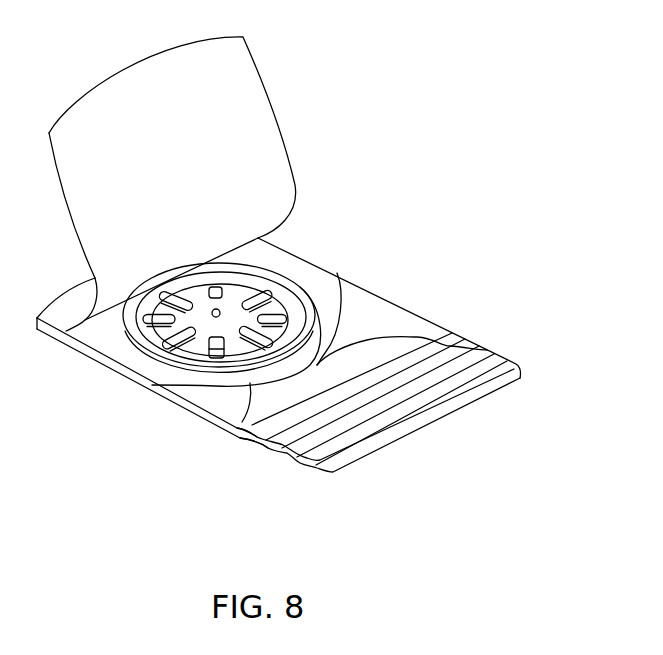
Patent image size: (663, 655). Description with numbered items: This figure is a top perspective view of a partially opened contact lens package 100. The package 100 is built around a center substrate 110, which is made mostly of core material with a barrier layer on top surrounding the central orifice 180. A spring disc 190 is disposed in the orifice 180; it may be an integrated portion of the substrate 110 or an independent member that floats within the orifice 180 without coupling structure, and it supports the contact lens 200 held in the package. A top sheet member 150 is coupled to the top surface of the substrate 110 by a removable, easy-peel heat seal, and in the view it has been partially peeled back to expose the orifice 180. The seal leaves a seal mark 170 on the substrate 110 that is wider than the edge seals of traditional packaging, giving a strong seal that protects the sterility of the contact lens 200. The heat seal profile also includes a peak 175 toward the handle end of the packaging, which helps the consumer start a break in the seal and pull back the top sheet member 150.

The contact lens package 100 is at (444, 93).
The substrate 110 is at (412, 310).
The top sheet member 150 is at (235, 115).
The seal mark 170 is at (230, 424).
The peak 175 is at (487, 350).
The orifice 180 is at (184, 352).
The spring disc 190 is at (232, 351).
The contact lens 200 is at (260, 286).